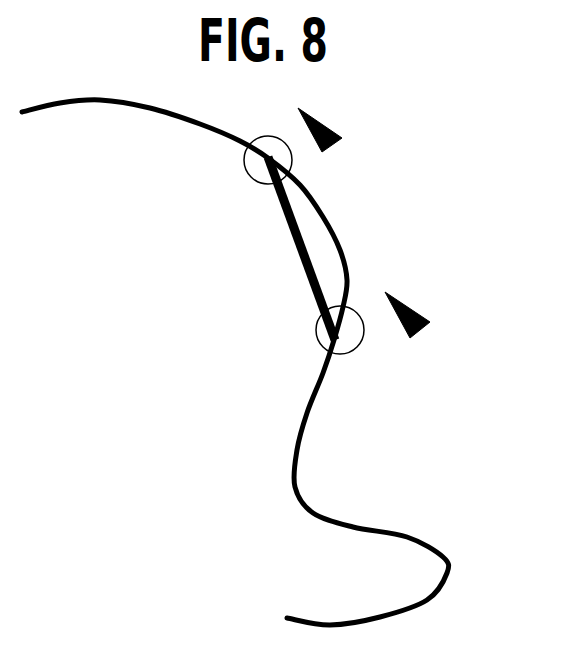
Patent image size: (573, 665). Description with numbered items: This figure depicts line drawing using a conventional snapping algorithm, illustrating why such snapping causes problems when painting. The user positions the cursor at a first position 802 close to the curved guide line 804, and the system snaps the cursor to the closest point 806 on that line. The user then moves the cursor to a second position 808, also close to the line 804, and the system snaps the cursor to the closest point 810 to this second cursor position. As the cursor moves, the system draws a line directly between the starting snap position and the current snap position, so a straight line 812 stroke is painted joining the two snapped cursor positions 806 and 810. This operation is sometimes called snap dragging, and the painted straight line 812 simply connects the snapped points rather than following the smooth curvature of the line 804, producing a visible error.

The first position 802 is at (330, 123).
The line 804 is at (297, 498).
The closest point 806 is at (293, 162).
The second position 808 is at (415, 308).
The closest point 810 is at (350, 353).
The straight line 812 is at (303, 260).